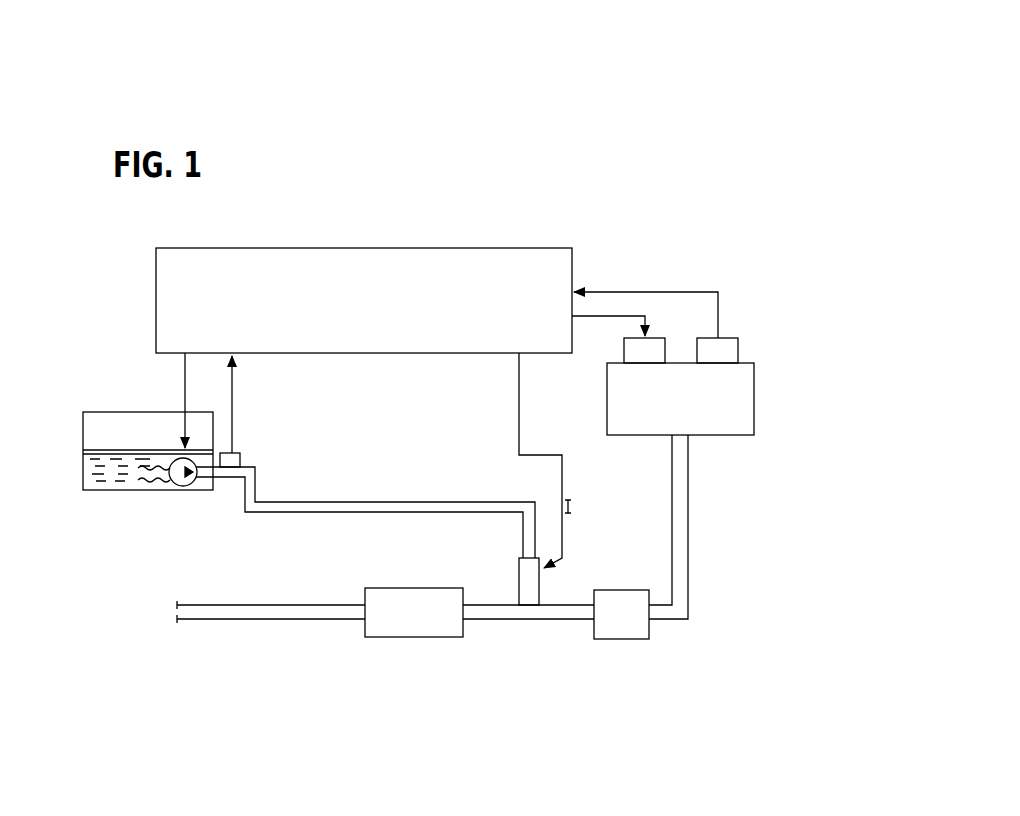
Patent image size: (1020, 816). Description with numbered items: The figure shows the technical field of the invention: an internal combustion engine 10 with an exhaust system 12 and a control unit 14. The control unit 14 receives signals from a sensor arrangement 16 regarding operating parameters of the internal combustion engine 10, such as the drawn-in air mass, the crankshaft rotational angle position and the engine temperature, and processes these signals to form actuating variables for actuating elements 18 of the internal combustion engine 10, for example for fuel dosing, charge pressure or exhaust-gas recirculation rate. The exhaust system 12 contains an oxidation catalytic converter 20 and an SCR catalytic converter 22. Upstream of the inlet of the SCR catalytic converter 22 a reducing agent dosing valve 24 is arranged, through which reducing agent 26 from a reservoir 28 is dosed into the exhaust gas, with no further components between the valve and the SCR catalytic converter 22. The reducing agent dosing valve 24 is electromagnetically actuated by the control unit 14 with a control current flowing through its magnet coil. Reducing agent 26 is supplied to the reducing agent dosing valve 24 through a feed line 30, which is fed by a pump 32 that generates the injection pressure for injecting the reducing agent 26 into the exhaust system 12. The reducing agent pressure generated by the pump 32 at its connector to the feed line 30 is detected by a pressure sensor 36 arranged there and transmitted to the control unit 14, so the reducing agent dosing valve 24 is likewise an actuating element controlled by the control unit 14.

The internal combustion engine 10 is at (745, 456).
The exhaust system 12 is at (726, 560).
The control unit 14 is at (362, 248).
The sensor arrangement 16 is at (722, 337).
The actuating elements 18 is at (657, 337).
The oxidation catalytic converter 20 is at (622, 640).
The SCR catalytic converter 22 is at (420, 638).
The reducing agent dosing valve 24 is at (519, 580).
The reducing agent 26 is at (96, 470).
The reservoir 28 is at (103, 411).
The feed line 30 is at (243, 522).
The pump 32 is at (172, 485).
The pressure sensor 36 is at (236, 452).